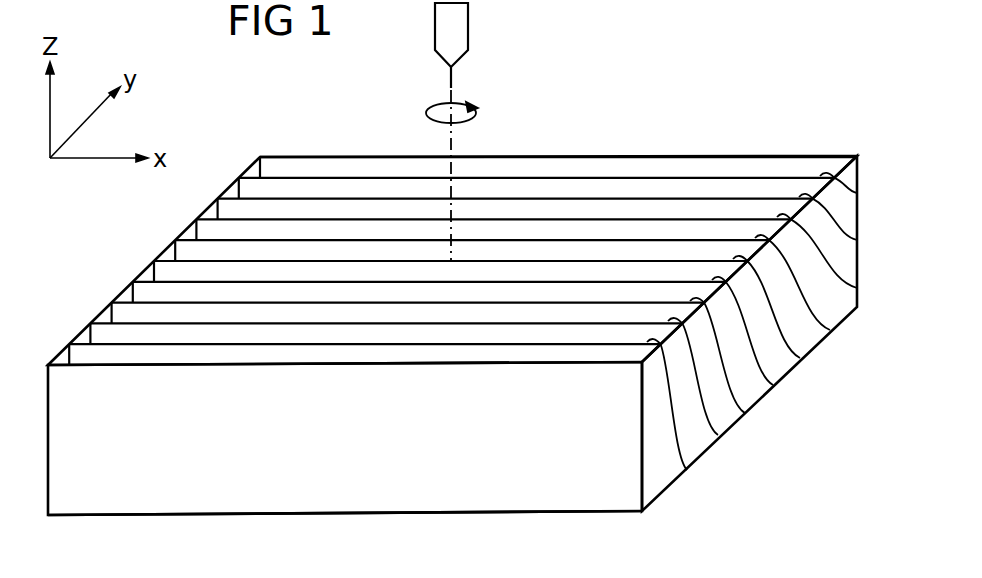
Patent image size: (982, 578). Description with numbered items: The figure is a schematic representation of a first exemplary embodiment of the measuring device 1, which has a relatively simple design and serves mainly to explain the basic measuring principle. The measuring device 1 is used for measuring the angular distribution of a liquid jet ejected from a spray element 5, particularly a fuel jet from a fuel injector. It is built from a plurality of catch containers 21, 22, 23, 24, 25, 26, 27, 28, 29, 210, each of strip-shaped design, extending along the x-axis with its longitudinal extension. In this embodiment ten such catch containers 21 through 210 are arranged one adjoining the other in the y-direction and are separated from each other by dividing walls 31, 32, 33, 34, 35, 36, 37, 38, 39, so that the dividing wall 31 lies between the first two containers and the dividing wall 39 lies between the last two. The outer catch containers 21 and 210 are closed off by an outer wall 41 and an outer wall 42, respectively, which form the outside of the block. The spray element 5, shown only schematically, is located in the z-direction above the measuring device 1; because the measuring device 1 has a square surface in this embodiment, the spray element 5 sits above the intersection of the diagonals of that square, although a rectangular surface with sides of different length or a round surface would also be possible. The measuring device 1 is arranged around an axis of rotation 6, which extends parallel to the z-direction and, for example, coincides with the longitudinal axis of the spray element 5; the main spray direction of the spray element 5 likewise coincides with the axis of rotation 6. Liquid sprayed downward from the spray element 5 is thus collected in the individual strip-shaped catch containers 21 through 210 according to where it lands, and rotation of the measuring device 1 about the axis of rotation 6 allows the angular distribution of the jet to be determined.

The measuring device 1 is at (140, 238).
The spray element 5 is at (455, 32).
The axis of rotation 6 is at (449, 84).
The catch container 21 is at (830, 162).
The catch container 22 is at (857, 194).
The catch container 23 is at (853, 241).
The catch container 24 is at (850, 289).
The catch container 25 is at (833, 330).
The catch container 26 is at (803, 358).
The catch container 27 is at (775, 385).
The catch container 28 is at (747, 412).
The catch container 29 is at (718, 436).
The catch container 210 is at (686, 468).
The dividing wall 31 is at (255, 175).
The dividing wall 32 is at (277, 199).
The dividing wall 33 is at (323, 219).
The dividing wall 34 is at (358, 240).
The dividing wall 35 is at (400, 261).
The dividing wall 36 is at (490, 282).
The dividing wall 37 is at (537, 303).
The dividing wall 38 is at (587, 323).
The dividing wall 39 is at (622, 344).
The outer wall 41 is at (755, 163).
The outer wall 42 is at (521, 467).